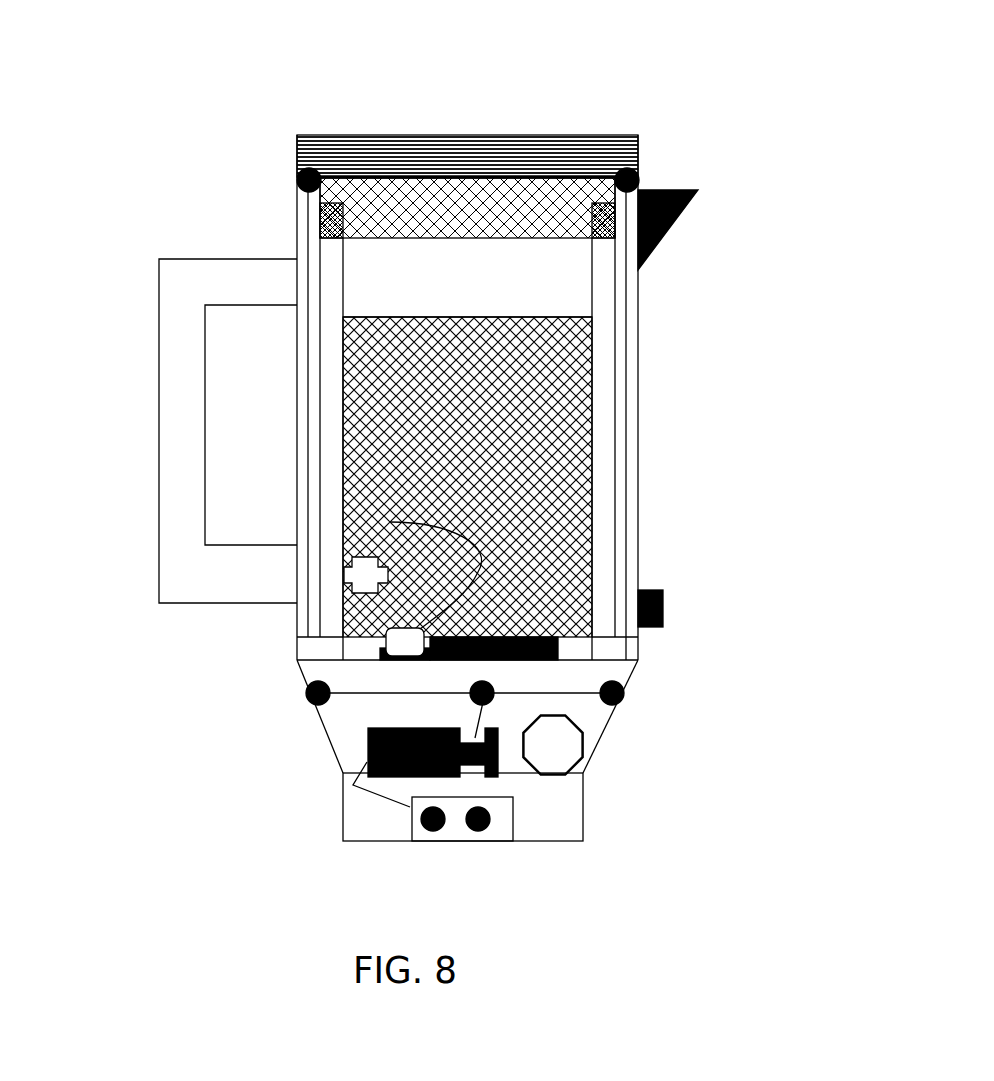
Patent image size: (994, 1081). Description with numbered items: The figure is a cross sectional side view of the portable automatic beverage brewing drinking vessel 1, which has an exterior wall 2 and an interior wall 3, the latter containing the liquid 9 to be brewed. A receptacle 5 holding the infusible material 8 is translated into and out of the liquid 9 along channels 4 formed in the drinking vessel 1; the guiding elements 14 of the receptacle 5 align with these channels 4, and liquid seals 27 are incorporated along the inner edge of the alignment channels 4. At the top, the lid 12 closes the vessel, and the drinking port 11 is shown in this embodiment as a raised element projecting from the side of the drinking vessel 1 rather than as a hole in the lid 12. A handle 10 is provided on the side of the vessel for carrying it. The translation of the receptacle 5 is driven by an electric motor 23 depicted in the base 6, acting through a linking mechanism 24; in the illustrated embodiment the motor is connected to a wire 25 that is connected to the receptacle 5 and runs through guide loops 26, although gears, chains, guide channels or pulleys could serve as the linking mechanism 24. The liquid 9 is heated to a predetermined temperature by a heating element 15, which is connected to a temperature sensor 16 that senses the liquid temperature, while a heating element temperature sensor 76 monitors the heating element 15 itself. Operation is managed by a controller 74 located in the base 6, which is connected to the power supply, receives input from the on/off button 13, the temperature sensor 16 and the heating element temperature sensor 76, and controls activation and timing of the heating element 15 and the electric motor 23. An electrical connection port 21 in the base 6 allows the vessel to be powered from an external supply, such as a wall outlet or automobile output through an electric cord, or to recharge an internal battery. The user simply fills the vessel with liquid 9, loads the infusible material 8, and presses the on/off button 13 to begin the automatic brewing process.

The drinking vessel 1 is at (685, 100).
The exterior wall 2 is at (638, 453).
The interior wall 3 is at (592, 511).
The channels 4 is at (337, 458).
The receptacle 5 is at (566, 172).
The base 6 is at (588, 718).
The infusible material 8 is at (470, 176).
The liquid 9 is at (370, 340).
The handle 10 is at (170, 247).
The drinking port 11 is at (700, 213).
The lid 12 is at (341, 129).
The on/off button 13 is at (663, 602).
The guiding elements 14 is at (350, 217).
The heating element 15 is at (560, 648).
The temperature sensor 16 is at (357, 577).
The electrical connection port 21 is at (517, 818).
The electric motor 23 is at (366, 740).
The linking mechanism 24 is at (463, 703).
The wire 25 is at (308, 225).
The guide loops 26 is at (640, 175).
The liquid seals 27 is at (615, 408).
The controller 74 is at (533, 742).
The heating element temperature sensor 76 is at (390, 522).